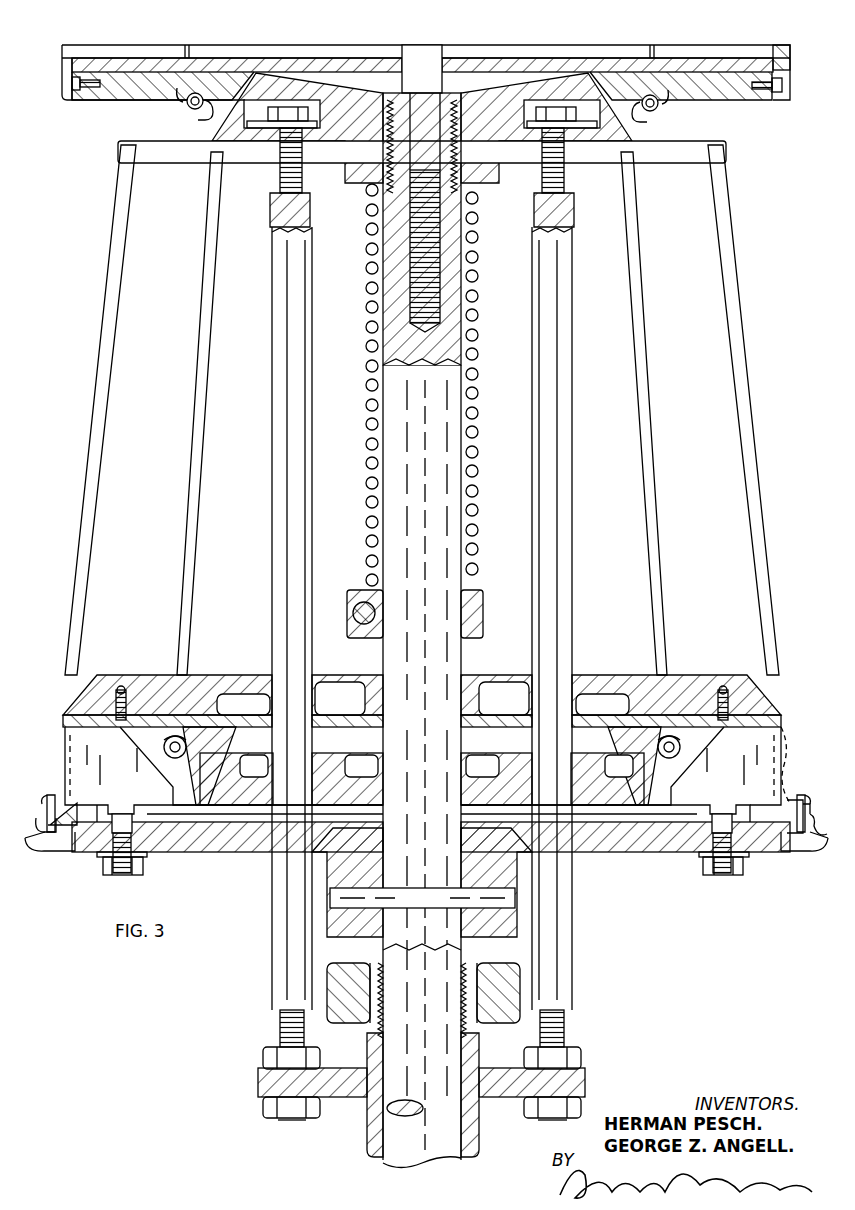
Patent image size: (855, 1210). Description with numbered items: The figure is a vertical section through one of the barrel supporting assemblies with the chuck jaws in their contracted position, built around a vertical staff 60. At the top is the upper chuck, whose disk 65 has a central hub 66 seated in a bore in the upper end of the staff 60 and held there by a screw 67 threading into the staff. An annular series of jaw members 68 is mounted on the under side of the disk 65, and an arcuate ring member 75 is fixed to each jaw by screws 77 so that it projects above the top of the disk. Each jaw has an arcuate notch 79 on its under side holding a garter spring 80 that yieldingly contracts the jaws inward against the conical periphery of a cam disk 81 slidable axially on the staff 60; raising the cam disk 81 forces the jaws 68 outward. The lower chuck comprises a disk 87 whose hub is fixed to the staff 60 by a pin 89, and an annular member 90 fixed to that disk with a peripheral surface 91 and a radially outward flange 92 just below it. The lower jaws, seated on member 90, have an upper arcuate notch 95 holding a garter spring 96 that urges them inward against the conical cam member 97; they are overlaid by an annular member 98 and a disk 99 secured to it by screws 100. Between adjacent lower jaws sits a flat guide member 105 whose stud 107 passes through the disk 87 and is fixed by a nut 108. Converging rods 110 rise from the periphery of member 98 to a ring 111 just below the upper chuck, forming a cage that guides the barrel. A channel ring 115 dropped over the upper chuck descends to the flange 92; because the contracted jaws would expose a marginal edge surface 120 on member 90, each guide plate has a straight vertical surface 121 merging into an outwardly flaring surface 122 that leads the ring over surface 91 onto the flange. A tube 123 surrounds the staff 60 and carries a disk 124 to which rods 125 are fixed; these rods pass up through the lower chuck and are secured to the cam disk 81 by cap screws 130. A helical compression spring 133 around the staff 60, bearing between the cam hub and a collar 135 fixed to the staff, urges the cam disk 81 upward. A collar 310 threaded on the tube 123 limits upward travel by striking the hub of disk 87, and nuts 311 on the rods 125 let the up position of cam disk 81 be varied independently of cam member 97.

The staff 60 is at (436, 784).
The disk 65 is at (318, 62).
The central hub 66 is at (462, 186).
The screw 67 is at (416, 62).
The jaw members 68 is at (112, 90).
The arcuate ring member 75 is at (207, 50).
The screws 77 is at (78, 83).
The arcuate notch 79 is at (186, 104).
The garter spring 80 is at (190, 110).
The cam disk 81 is at (327, 128).
The disk 87 is at (638, 840).
The pin 89 is at (422, 882).
The annular member 90 is at (178, 820).
The peripheral surface 91 is at (40, 818).
The flange 92 is at (24, 848).
The arcuate notch 95 is at (683, 722).
The garter spring 96 is at (186, 752).
The cam member 97 is at (250, 784).
The annular member 98 is at (615, 700).
The disk 99 is at (218, 688).
The screws 100 is at (122, 684).
The guide member 105 is at (132, 782).
The stud 107 is at (112, 845).
The nut 108 is at (132, 866).
The converging rods 110 is at (210, 232).
The ring 111 is at (682, 160).
The ring 115 is at (47, 805).
The marginal edge surface 120 is at (792, 790).
The straight vertical surfaces 121 is at (788, 748).
The outwardly flaring surface 122 is at (800, 800).
The tube 123 is at (440, 1147).
The disk 124 is at (500, 1090).
The rods 125 is at (300, 242).
The cap screws 130 is at (290, 110).
The helical compression spring 133 is at (470, 422).
The collar 135 is at (470, 624).
The collar 310 is at (520, 982).
The nuts 311 is at (582, 1060).